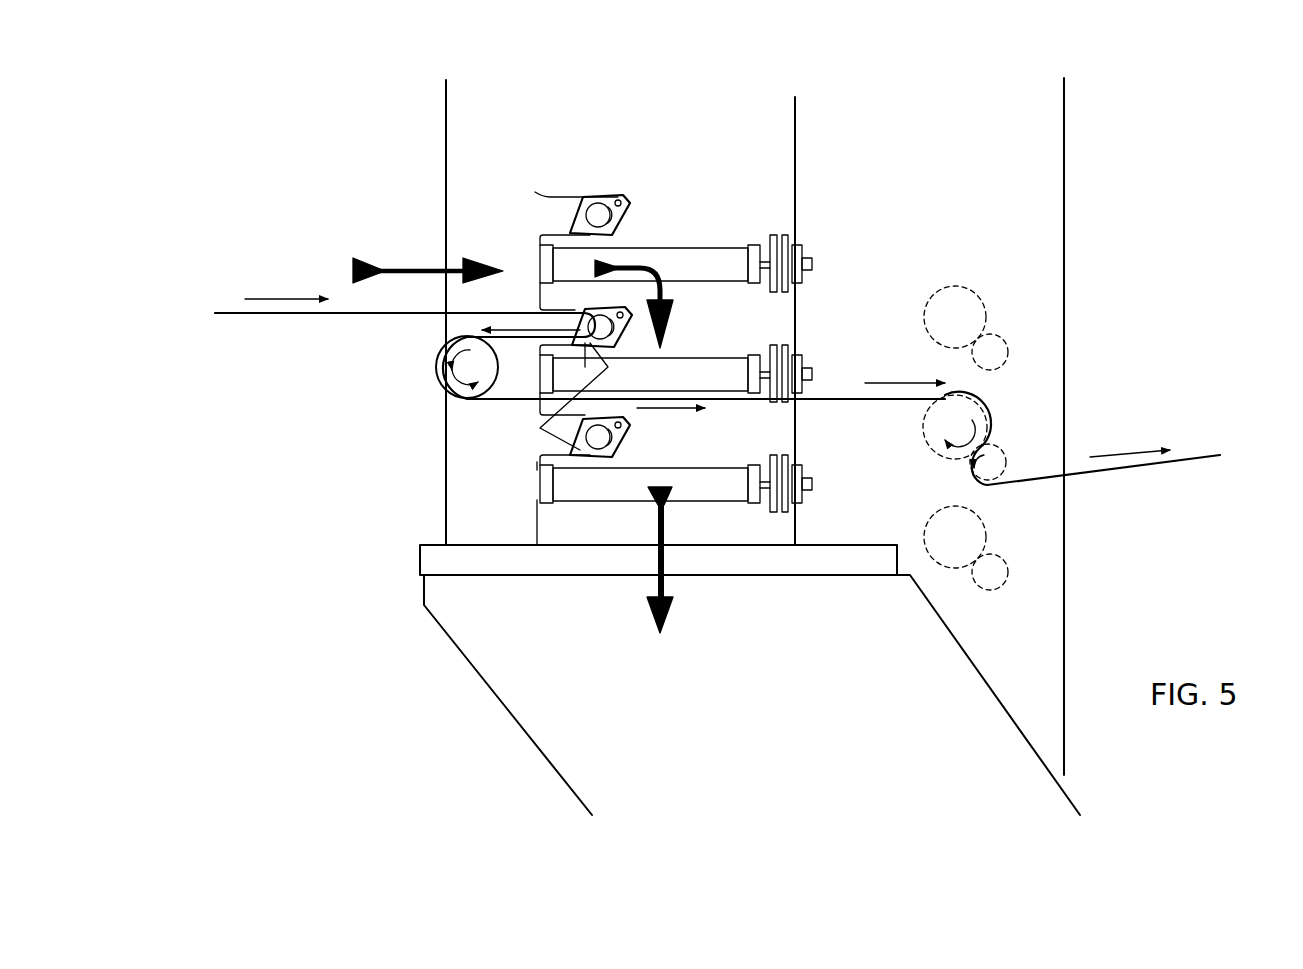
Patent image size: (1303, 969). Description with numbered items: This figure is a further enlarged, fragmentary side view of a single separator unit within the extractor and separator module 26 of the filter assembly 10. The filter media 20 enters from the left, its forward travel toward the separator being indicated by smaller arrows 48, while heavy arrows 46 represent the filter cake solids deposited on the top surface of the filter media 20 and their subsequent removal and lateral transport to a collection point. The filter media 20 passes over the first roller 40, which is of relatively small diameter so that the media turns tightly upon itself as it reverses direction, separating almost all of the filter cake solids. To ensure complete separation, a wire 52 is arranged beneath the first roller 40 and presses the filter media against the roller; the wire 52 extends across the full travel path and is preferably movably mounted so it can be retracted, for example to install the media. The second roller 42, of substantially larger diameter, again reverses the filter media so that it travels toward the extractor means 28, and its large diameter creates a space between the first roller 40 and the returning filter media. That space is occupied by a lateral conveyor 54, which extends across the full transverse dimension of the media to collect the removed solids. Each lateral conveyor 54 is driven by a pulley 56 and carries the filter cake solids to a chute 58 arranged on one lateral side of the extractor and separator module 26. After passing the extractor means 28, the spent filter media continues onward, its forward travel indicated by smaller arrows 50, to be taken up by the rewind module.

The filter assembly 10 is at (1095, 66).
The filter media 20 is at (277, 318).
The extractor and separator module 26 is at (686, 100).
The extractor means 28 is at (996, 428).
The first roller 40 is at (597, 215).
The second roller 42 is at (465, 363).
The heavy arrows 46 is at (423, 270).
The smaller arrows 48 is at (285, 298).
The smaller arrows 50 is at (1130, 447).
The wire 52 is at (573, 212).
The lateral conveyor 54 is at (712, 247).
The pulley 56 is at (800, 252).
The chute 58 is at (517, 740).